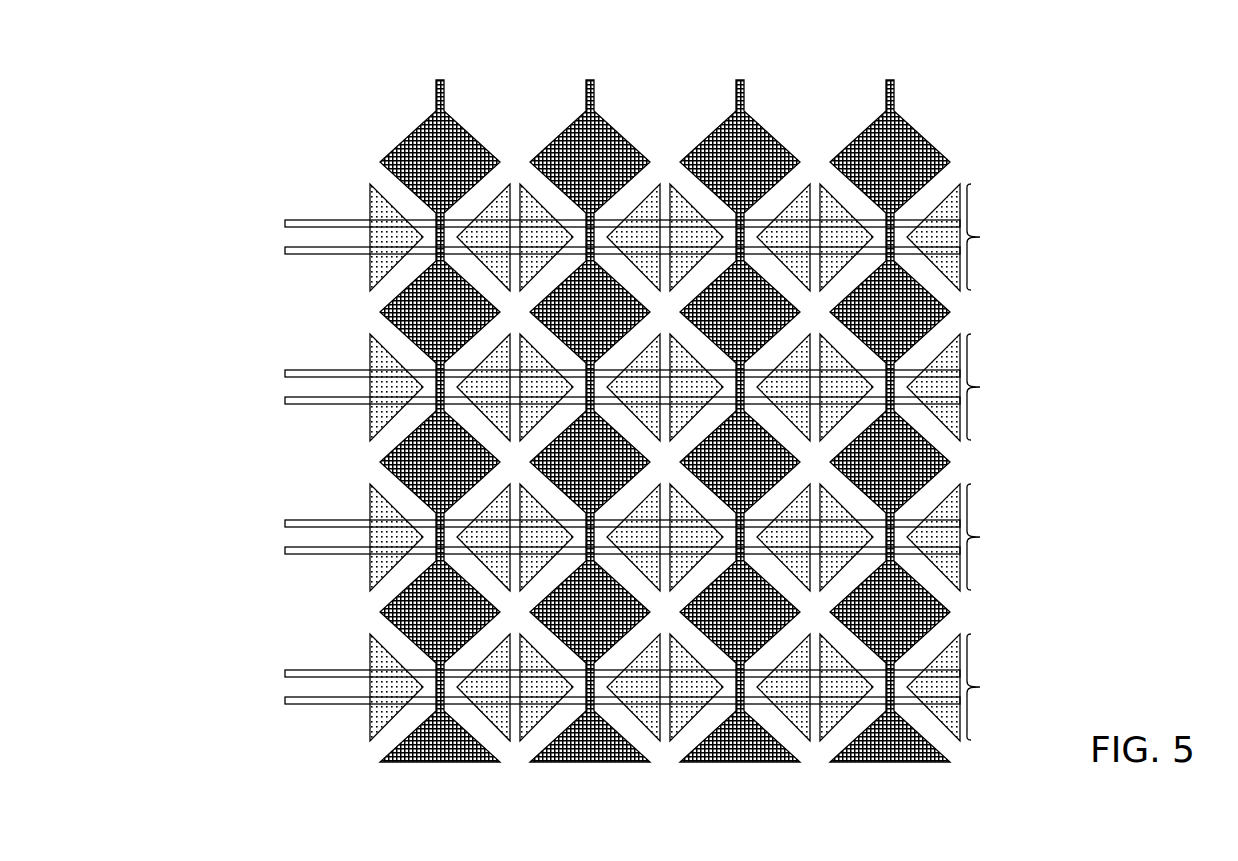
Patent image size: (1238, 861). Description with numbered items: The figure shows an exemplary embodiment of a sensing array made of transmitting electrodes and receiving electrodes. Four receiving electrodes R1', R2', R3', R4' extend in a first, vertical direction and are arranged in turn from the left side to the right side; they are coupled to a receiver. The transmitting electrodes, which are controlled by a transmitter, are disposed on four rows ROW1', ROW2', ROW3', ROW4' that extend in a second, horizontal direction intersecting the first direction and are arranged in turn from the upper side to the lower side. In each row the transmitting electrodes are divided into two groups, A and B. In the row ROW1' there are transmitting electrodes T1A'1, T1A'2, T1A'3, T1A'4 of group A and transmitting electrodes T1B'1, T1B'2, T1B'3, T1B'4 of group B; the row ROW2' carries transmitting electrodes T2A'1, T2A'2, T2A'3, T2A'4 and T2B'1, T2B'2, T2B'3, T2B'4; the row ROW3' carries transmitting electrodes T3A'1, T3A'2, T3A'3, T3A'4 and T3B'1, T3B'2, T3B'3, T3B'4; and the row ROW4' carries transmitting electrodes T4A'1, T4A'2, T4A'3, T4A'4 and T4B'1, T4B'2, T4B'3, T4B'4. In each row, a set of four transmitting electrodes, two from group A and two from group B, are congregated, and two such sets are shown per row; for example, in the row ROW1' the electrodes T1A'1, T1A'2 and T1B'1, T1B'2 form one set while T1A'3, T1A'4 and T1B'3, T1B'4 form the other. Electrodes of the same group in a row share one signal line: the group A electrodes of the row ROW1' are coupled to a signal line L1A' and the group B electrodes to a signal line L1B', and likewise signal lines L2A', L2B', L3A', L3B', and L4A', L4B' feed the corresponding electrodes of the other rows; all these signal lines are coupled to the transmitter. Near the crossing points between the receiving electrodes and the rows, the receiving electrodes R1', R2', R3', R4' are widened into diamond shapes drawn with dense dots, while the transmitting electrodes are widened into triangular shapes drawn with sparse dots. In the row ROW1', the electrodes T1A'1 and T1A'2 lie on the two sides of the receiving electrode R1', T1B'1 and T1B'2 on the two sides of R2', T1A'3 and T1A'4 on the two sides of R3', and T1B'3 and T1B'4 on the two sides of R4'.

The receiving electrode R1' is at (440, 408).
The receiving electrode R2' is at (590, 408).
The receiving electrode R3' is at (740, 408).
The receiving electrode R4' is at (890, 408).
The signal line L1A' is at (584, 220).
The signal line L1B' is at (584, 255).
The signal line L2A' is at (584, 370).
The signal line L2B' is at (584, 405).
The signal line L3A' is at (584, 520).
The signal line L3B' is at (584, 555).
The signal line L4A' is at (584, 670).
The signal line L4B' is at (584, 705).
The transmitting electrode T1A'1 is at (396, 237).
The transmitting electrode T1A'2 is at (483, 237).
The transmitting electrode T1B'1 is at (546, 237).
The transmitting electrode T1B'2 is at (633, 237).
The transmitting electrode T1A'3 is at (696, 237).
The transmitting electrode T1A'4 is at (783, 237).
The transmitting electrode T1B'3 is at (846, 237).
The transmitting electrode T1B'4 is at (933, 237).
The transmitting electrode T2A'1 is at (396, 387).
The transmitting electrode T2A'2 is at (483, 387).
The transmitting electrode T2B'1 is at (546, 387).
The transmitting electrode T2B'2 is at (633, 387).
The transmitting electrode T2A'3 is at (696, 387).
The transmitting electrode T2A'4 is at (783, 387).
The transmitting electrode T2B'3 is at (846, 387).
The transmitting electrode T2B'4 is at (933, 387).
The transmitting electrode T3A'1 is at (396, 537).
The transmitting electrode T3A'2 is at (483, 537).
The transmitting electrode T3B'1 is at (546, 537).
The transmitting electrode T3B'2 is at (633, 537).
The transmitting electrode T3A'3 is at (696, 537).
The transmitting electrode T3A'4 is at (783, 537).
The transmitting electrode T3B'3 is at (846, 537).
The transmitting electrode T3B'4 is at (933, 537).
The transmitting electrode T4A'1 is at (396, 687).
The transmitting electrode T4A'2 is at (483, 687).
The transmitting electrode T4B'1 is at (546, 687).
The transmitting electrode T4B'2 is at (633, 687).
The transmitting electrode T4A'3 is at (696, 687).
The transmitting electrode T4A'4 is at (783, 687).
The transmitting electrode T4B'3 is at (846, 687).
The transmitting electrode T4B'4 is at (933, 687).
The row ROW1' is at (1005, 237).
The row ROW2' is at (1005, 387).
The row ROW3' is at (1005, 537).
The row ROW4' is at (1005, 687).